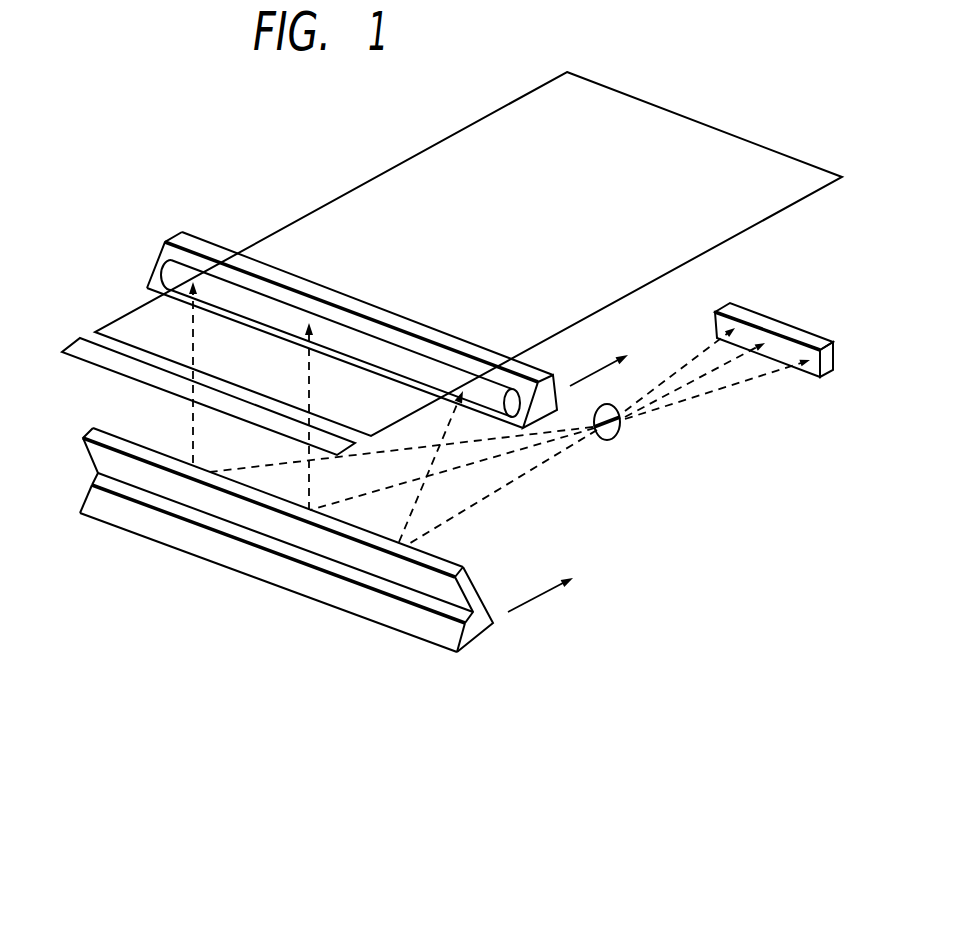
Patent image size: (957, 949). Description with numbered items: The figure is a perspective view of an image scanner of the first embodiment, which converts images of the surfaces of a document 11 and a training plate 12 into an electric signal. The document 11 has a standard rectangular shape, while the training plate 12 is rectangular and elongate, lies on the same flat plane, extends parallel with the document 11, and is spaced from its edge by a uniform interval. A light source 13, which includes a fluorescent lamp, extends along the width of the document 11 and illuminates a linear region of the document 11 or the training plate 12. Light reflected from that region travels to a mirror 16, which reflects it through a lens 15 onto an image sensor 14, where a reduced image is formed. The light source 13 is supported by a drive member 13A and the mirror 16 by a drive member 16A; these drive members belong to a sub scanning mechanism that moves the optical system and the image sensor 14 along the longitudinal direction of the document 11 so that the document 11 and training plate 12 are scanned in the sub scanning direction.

The document 11 is at (465, 138).
The training plate 12 is at (73, 342).
The light source 13 is at (170, 270).
The drive member 13A is at (178, 240).
The image sensor 14 is at (820, 330).
The lens 15 is at (607, 441).
The mirror 16 is at (242, 517).
The drive member 16A is at (365, 602).